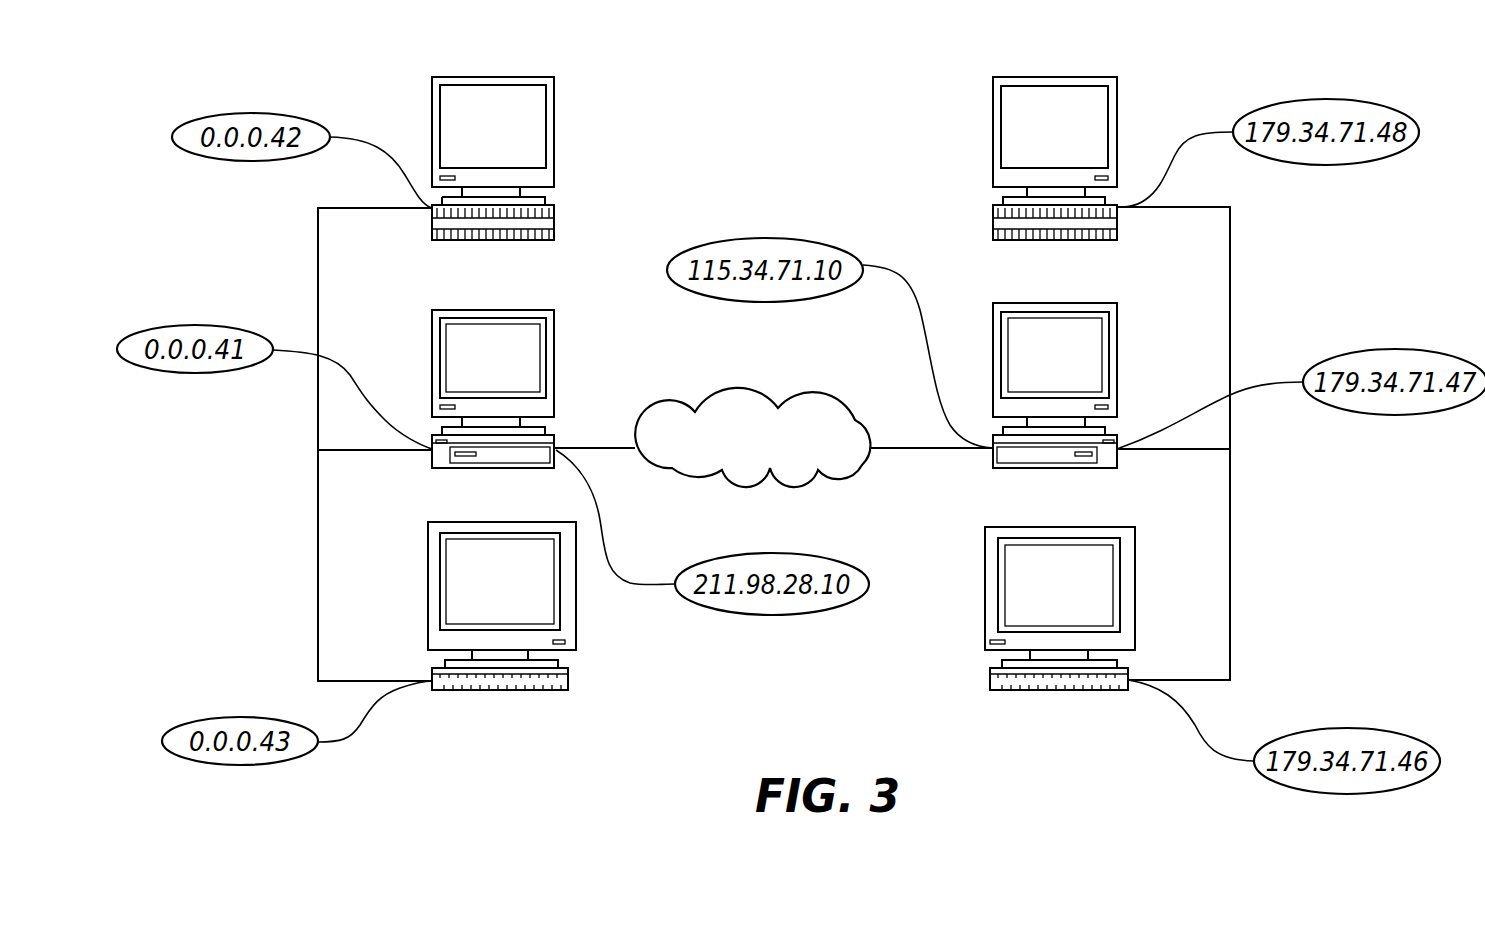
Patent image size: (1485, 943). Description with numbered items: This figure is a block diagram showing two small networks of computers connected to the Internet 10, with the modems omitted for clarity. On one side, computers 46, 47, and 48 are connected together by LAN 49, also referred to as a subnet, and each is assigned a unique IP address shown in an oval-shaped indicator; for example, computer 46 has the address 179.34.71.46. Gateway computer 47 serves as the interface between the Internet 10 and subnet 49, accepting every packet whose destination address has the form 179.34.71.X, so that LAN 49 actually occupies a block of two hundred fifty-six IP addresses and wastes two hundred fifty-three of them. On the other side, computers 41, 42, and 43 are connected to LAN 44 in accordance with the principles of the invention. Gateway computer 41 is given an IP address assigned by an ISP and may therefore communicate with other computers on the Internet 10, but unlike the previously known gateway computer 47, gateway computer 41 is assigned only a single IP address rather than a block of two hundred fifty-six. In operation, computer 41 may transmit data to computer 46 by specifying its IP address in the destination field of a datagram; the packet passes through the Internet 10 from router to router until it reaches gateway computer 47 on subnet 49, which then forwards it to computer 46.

The Internet 10 is at (661, 406).
The gateway computer 41 is at (459, 310).
The computer 42 is at (459, 77).
The computer 43 is at (455, 522).
The LAN 44 is at (318, 272).
The computer 46 is at (1103, 527).
The gateway computer 47 is at (1089, 303).
The computer 48 is at (1089, 77).
The LAN 49 is at (1230, 335).